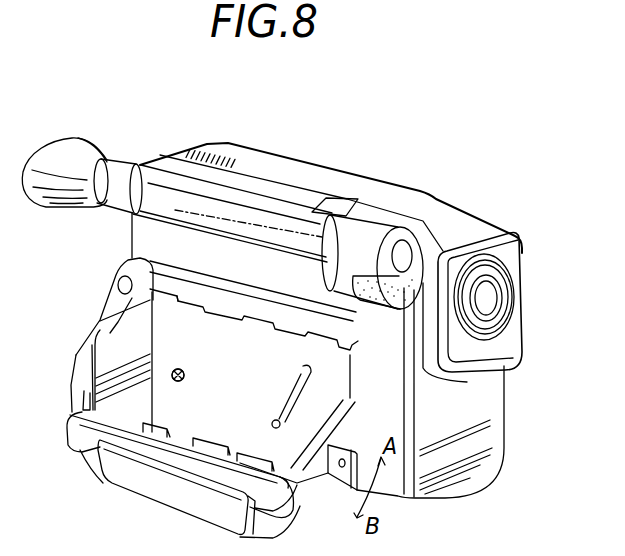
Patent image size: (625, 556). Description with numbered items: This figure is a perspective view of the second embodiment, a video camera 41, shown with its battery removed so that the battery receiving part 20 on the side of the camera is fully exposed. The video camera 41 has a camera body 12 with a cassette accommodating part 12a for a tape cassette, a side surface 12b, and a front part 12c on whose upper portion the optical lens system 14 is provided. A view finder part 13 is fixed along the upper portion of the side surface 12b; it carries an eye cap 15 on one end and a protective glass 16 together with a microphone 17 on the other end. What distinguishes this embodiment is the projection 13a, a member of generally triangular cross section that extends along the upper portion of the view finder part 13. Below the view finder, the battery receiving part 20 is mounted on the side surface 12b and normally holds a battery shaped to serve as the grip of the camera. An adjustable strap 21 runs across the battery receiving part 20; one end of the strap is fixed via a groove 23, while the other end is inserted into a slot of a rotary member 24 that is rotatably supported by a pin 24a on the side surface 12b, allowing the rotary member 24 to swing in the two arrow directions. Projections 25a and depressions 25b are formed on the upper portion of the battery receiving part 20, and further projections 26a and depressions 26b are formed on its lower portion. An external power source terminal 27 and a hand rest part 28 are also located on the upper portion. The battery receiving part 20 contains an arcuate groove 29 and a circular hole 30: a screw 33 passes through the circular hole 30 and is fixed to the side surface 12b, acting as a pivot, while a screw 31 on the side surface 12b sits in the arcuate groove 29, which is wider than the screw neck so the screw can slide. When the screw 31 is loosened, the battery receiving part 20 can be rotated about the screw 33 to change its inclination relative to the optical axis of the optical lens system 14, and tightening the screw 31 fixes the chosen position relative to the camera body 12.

The video camera 41 is at (438, 133).
The camera body 12 is at (382, 200).
The cassette accommodating part 12a is at (291, 159).
The side surface 12b is at (136, 232).
The front part 12c is at (481, 417).
The view finder part 13 is at (245, 188).
The projection 13a is at (324, 214).
The optical lens system 14 is at (489, 297).
The eye cap 15 is at (88, 152).
The protective glass 16 is at (401, 257).
The microphone 17 is at (397, 303).
The battery receiving part 20 is at (97, 337).
The adjustable strap 21 is at (183, 492).
The groove 23 is at (83, 397).
The rotary member 24 is at (340, 488).
The pin 24a is at (347, 447).
The projections 25a is at (100, 331).
The depressions 25b is at (187, 303).
The projections 26a is at (157, 425).
The depressions 26b is at (181, 438).
The external power source terminal 27 is at (118, 281).
The hand rest part 28 is at (275, 305).
The arcuate groove 29 is at (307, 395).
The circular hole 30 is at (185, 373).
The screw 31 is at (275, 420).
The screw 33 is at (178, 369).